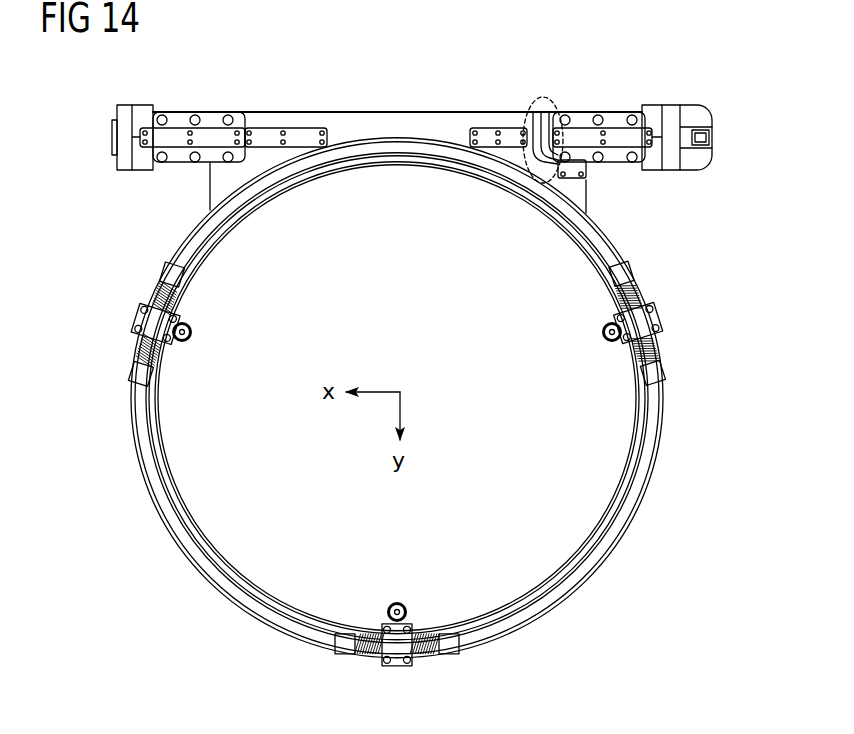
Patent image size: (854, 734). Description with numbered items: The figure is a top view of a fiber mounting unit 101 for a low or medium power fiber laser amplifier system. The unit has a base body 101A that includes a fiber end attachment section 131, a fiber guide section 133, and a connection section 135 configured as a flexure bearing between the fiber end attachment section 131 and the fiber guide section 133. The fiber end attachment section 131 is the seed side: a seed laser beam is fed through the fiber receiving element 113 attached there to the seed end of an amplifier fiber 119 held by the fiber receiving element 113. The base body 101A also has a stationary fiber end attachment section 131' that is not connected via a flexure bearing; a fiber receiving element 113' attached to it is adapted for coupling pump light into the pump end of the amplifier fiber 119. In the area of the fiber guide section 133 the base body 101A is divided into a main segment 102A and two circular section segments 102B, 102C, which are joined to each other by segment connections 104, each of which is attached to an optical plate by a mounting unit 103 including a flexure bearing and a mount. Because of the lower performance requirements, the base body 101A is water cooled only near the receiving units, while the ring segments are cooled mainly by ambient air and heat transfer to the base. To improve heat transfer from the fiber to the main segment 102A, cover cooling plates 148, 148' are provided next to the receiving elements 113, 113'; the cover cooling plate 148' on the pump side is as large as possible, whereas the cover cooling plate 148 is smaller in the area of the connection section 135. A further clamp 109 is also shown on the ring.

The fiber mounting unit 101 is at (292, 90).
The base body 101A is at (223, 178).
The main segment 102A is at (401, 112).
The circular section segment 102B is at (160, 507).
The circular section segment 102C is at (640, 508).
The mounting unit 103 is at (193, 333).
The segment connection 104 is at (127, 309).
The clamp 109 is at (672, 312).
The fiber receiving element 113 is at (677, 165).
The fiber receiving element 113' is at (149, 114).
The amplifier fiber 119 is at (640, 410).
The fiber end attachment section 131 is at (602, 101).
The stationary fiber end attachment section 131' is at (199, 95).
The fiber guide section 133 is at (143, 237).
The connection section 135 is at (530, 109).
The cover cooling plate 148 is at (491, 174).
The cover cooling plate 148' is at (286, 173).